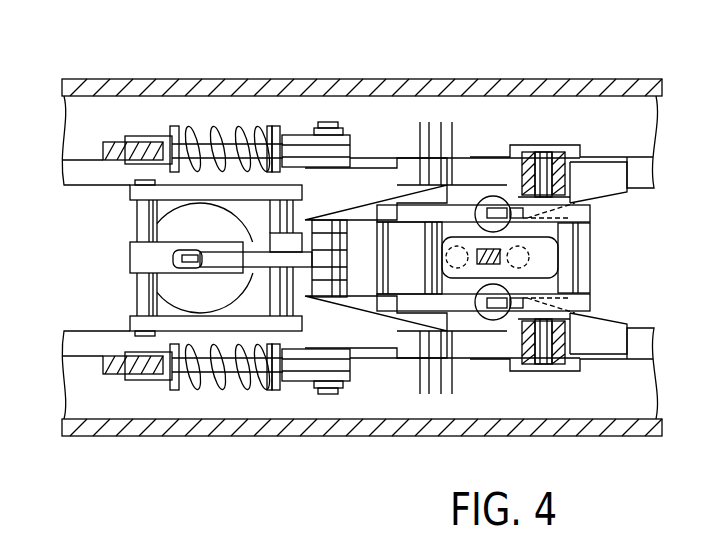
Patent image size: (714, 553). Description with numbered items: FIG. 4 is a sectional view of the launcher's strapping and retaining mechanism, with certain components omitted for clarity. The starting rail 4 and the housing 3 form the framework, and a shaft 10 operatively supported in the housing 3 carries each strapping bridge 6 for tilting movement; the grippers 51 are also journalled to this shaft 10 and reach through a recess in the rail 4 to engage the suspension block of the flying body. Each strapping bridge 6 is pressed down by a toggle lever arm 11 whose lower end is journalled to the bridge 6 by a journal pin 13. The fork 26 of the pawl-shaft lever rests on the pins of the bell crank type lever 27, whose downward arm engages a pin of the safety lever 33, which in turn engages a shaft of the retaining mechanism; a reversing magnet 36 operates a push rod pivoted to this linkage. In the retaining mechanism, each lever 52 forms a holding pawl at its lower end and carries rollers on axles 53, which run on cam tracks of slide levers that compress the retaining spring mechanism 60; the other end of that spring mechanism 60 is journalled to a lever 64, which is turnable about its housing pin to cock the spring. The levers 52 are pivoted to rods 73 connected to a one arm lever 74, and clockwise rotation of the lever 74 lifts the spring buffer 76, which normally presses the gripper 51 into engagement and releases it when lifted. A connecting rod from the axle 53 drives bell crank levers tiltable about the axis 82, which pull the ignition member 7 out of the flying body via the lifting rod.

The housing 3 is at (267, 428).
The starting rail 4 is at (78, 163).
The strapping bridge 6 is at (470, 158).
The ignition member 7 is at (532, 273).
The shaft 10 is at (424, 157).
The toggle lever arm 11 is at (538, 152).
The journal pin 13 is at (548, 152).
The fork 26 is at (190, 252).
The bell crank type lever 27 is at (258, 264).
The safety lever 33 is at (303, 238).
The reversing magnet 36 is at (168, 290).
The gripper 51 is at (603, 177).
The lever 52 is at (352, 190).
The axle 53 is at (328, 226).
The retaining spring mechanism 60 is at (212, 140).
The lever 64 is at (115, 160).
The rod 73 is at (455, 206).
The one arm lever 74 is at (569, 163).
The spring buffer 76 is at (494, 196).
The axis 82 is at (567, 266).